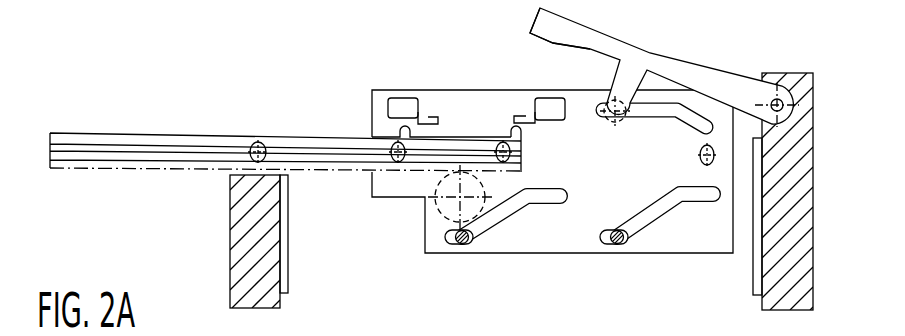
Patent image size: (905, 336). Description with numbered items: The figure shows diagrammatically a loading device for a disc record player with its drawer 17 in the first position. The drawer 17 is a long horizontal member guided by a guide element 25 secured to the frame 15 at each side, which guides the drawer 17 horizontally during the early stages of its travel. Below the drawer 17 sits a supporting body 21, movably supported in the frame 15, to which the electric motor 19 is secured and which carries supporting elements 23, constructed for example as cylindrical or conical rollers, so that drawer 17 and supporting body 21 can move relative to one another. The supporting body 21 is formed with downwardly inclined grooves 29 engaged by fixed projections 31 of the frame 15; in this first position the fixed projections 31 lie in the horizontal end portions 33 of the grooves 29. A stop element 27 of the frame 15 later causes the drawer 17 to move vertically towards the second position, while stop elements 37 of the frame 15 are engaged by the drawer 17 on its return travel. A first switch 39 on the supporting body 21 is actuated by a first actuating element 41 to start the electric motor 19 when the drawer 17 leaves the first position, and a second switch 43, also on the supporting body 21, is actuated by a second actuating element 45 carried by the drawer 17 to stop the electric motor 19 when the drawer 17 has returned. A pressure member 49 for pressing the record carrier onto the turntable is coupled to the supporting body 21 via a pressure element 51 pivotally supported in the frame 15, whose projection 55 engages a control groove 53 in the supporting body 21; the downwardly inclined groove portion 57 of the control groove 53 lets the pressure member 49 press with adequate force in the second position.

The frame 15 is at (240, 274).
The drawer 17 is at (105, 138).
The electric motor 19 is at (440, 208).
The supporting body 21 is at (537, 248).
The supporting elements 23 is at (509, 148).
The guide element 25 is at (255, 142).
The stop element 27 is at (753, 280).
The grooves 29 is at (507, 212).
The fixed projections 31 is at (471, 246).
The horizontal end portions 33 is at (462, 245).
The stop elements 37 is at (288, 263).
The first switch 39 is at (414, 105).
The first actuating element 41 is at (372, 127).
The second switch 43 is at (535, 108).
The second actuating element 45 is at (521, 133).
The pressure member 49 is at (531, 34).
The pressure element 51 is at (635, 57).
The control groove 53 is at (657, 115).
The projection 55 is at (615, 124).
The downwardly inclined groove portion 57 is at (686, 121).